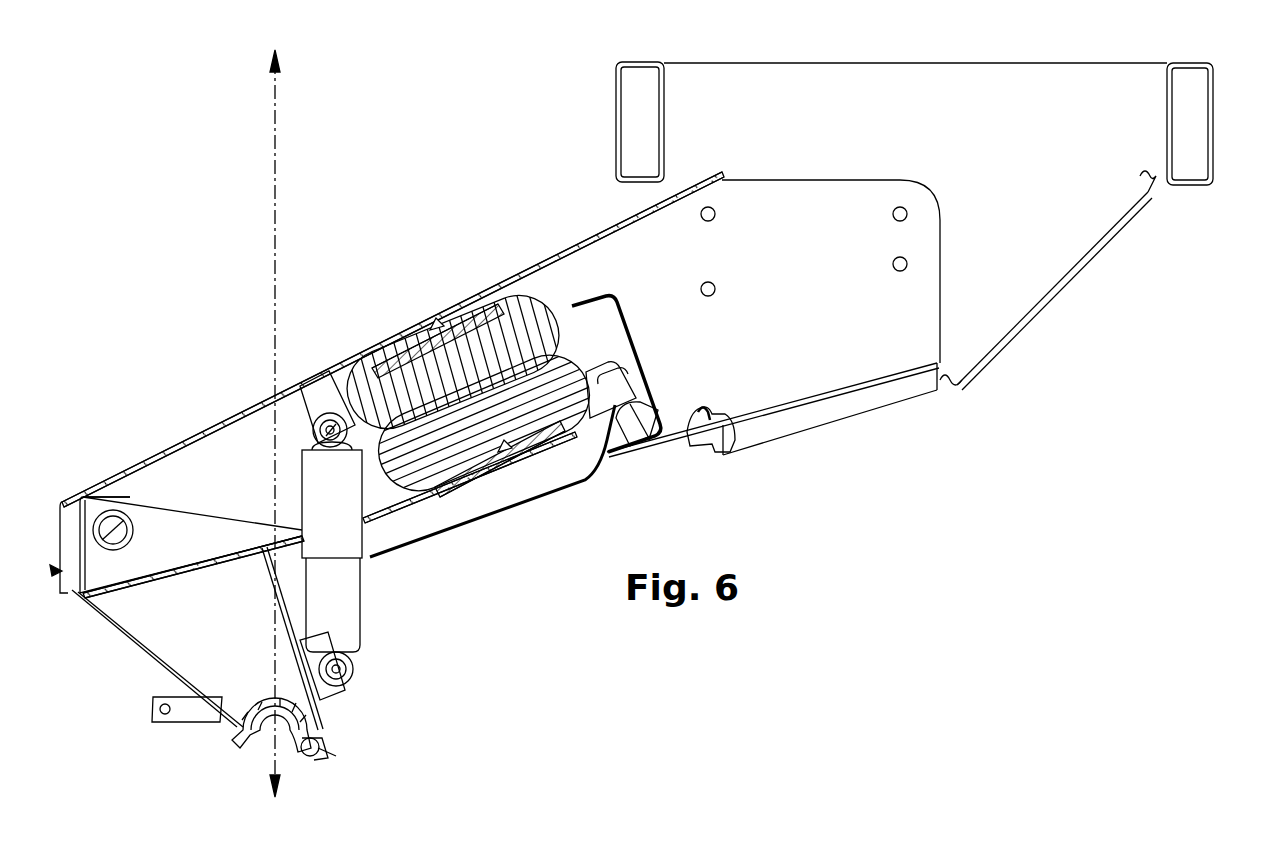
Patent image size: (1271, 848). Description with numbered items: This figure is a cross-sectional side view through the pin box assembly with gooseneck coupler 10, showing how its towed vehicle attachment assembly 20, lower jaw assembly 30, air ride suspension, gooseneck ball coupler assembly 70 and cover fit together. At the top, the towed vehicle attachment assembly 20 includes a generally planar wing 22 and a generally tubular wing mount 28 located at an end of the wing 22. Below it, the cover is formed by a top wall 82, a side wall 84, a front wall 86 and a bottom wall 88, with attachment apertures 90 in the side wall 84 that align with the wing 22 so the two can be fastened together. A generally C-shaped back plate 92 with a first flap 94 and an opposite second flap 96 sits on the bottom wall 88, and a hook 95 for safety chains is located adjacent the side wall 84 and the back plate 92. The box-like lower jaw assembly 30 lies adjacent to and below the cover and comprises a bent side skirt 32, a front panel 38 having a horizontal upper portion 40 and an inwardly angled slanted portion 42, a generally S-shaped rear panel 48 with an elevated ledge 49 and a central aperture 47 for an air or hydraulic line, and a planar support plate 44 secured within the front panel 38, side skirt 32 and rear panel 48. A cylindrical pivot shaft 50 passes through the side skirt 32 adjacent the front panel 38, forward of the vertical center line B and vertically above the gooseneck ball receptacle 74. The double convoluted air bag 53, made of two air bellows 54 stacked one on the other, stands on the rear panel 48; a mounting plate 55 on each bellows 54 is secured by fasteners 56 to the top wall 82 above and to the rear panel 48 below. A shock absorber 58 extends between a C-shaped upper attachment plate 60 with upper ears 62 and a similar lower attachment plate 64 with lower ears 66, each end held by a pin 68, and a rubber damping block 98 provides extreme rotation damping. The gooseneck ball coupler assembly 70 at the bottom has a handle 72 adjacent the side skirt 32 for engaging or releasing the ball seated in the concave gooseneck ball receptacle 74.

The vertical center line B is at (277, 130).
The pin box assembly with gooseneck coupler 10 is at (235, 158).
The towed vehicle attachment assembly 20 is at (975, 40).
The wing 22 is at (1035, 265).
The wing mount 28 is at (636, 62).
The lower jaw assembly 30 is at (250, 295).
The side skirt 32 is at (410, 530).
The front panel 38 is at (58, 578).
The upper portion 40 is at (110, 498).
The slanted portion 42 is at (138, 650).
The support plate 44 is at (385, 520).
The aperture 47 is at (526, 460).
The rear panel 48 is at (570, 430).
The ledge 49 is at (648, 383).
The pivot shaft 50 is at (118, 538).
The air bag 53 is at (545, 268).
The air bellows 54 is at (385, 398).
The mounting plate 55 is at (462, 305).
The fastener 56 is at (437, 320).
The shock absorber 58 is at (325, 495).
The upper attachment plate 60 is at (318, 420).
The upper ear 62 is at (312, 426).
The lower attachment plate 64 is at (312, 688).
The lower ear 66 is at (342, 688).
The pin 68 is at (314, 430).
The gooseneck ball coupler assembly 70 is at (350, 766).
The handle 72 is at (180, 712).
The gooseneck ball receptacle 74 is at (272, 724).
The top wall 82 is at (612, 235).
The side wall 84 is at (815, 410).
The front wall 86 is at (64, 560).
The bottom wall 88 is at (758, 430).
The attachment aperture 90 is at (714, 210).
The back plate 92 is at (650, 380).
The first flap 94 is at (580, 305).
The hook 95 is at (722, 455).
The second flap 96 is at (658, 445).
The damping block 98 is at (644, 442).